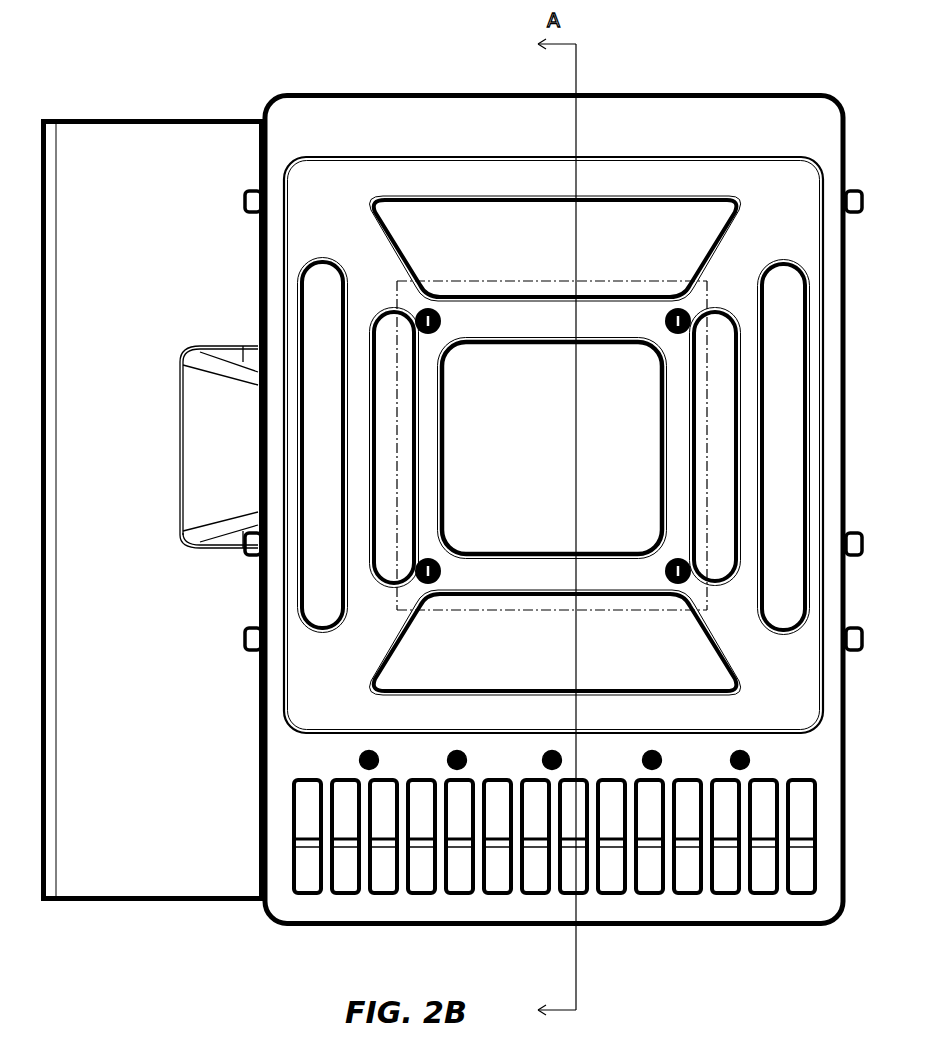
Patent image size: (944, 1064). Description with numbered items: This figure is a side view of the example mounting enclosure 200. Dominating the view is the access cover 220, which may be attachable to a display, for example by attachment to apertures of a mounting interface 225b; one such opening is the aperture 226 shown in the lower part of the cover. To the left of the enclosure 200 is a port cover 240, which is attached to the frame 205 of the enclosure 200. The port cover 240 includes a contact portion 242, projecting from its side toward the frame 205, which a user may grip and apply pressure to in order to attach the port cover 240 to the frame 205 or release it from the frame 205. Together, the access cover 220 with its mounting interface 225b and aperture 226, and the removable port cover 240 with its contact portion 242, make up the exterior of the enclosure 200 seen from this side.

The enclosure 200 is at (130, 58).
The frame 205 is at (400, 93).
The access cover 220 is at (658, 108).
The mounting interface 225b is at (506, 281).
The aperture 226 is at (681, 610).
The port cover 240 is at (161, 257).
The contact portion 242 is at (167, 541).